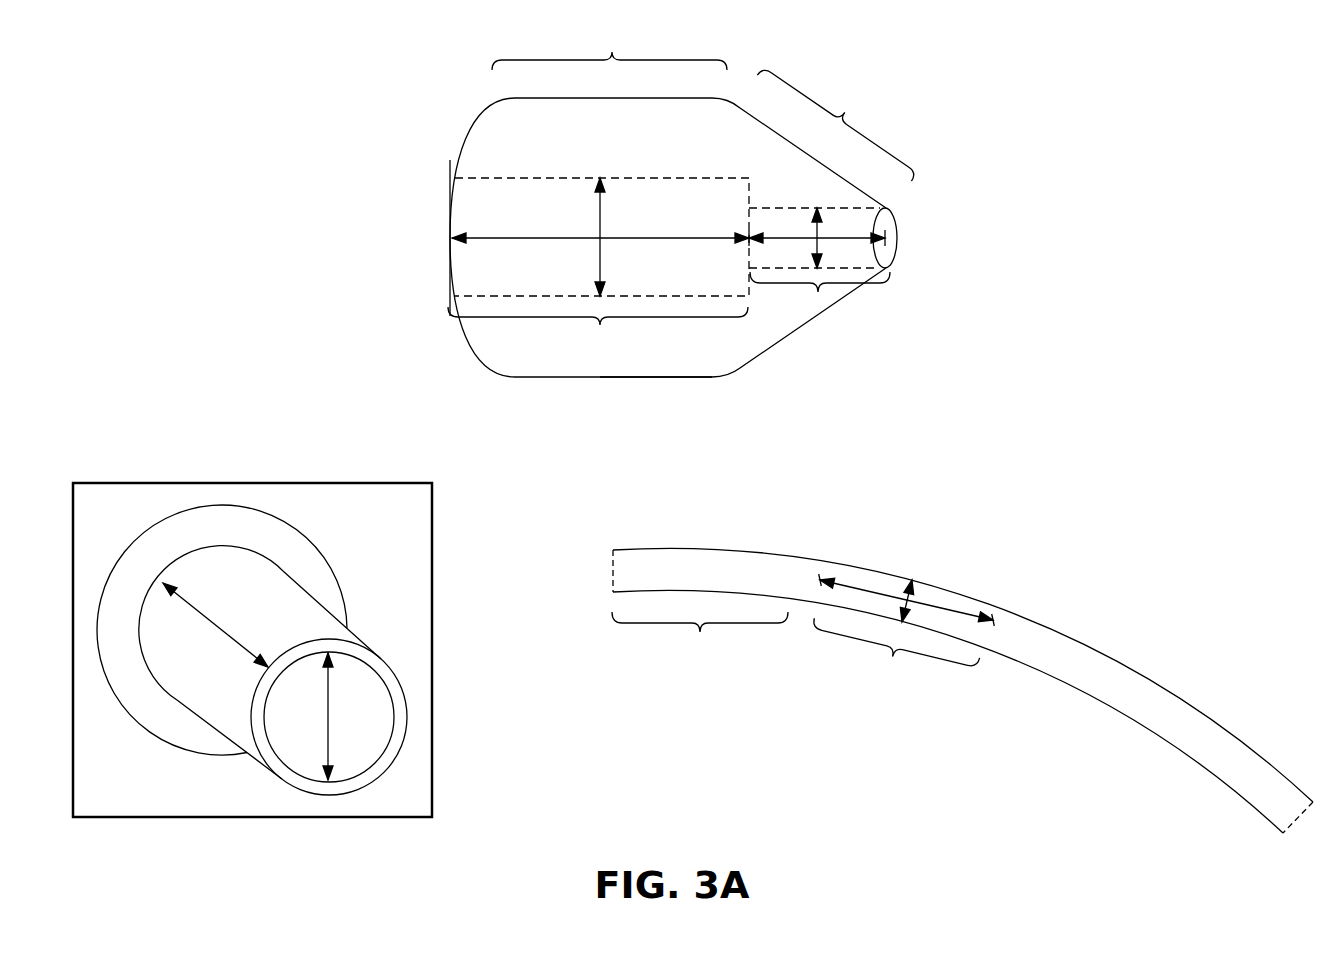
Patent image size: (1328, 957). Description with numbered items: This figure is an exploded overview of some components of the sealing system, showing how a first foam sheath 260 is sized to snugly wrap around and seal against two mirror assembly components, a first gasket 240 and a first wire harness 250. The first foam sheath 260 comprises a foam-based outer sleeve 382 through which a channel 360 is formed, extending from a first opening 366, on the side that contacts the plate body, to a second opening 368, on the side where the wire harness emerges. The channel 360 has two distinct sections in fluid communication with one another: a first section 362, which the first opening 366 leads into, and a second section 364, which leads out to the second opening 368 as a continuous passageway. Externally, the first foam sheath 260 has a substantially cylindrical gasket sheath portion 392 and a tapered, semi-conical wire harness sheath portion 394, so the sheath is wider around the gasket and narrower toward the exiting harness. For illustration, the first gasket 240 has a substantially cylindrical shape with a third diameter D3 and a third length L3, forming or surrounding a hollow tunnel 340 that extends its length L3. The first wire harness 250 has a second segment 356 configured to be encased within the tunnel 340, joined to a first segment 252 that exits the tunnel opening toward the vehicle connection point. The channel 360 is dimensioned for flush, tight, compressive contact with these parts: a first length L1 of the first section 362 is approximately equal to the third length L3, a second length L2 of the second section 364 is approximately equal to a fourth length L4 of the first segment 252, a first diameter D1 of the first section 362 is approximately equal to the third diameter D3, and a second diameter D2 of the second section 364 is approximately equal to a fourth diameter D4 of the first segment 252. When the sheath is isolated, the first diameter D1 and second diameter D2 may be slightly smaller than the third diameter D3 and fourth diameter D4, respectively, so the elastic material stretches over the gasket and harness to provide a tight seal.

The first gasket 240 is at (310, 593).
The first wire harness 250 is at (1060, 627).
The first segment 252 is at (895, 653).
The first foam sheath 260 is at (598, 377).
The hollow tunnel 340 is at (352, 722).
The second segment 356 is at (700, 637).
The channel 360 is at (530, 207).
The first section 362 is at (598, 332).
The second section 364 is at (818, 292).
The first opening 366 is at (430, 217).
The second opening 368 is at (897, 238).
The foam-based outer sleeve 382 is at (665, 347).
The gasket sheath portion 392 is at (609, 46).
The wire harness sheath portion 394 is at (839, 121).
The first length L1 is at (668, 238).
The second length L2 is at (793, 237).
The third length L3 is at (218, 624).
The fourth length L4 is at (867, 590).
The first diameter D1 is at (600, 250).
The second diameter D2 is at (815, 220).
The third diameter D3 is at (333, 693).
The fourth diameter D4 is at (902, 590).